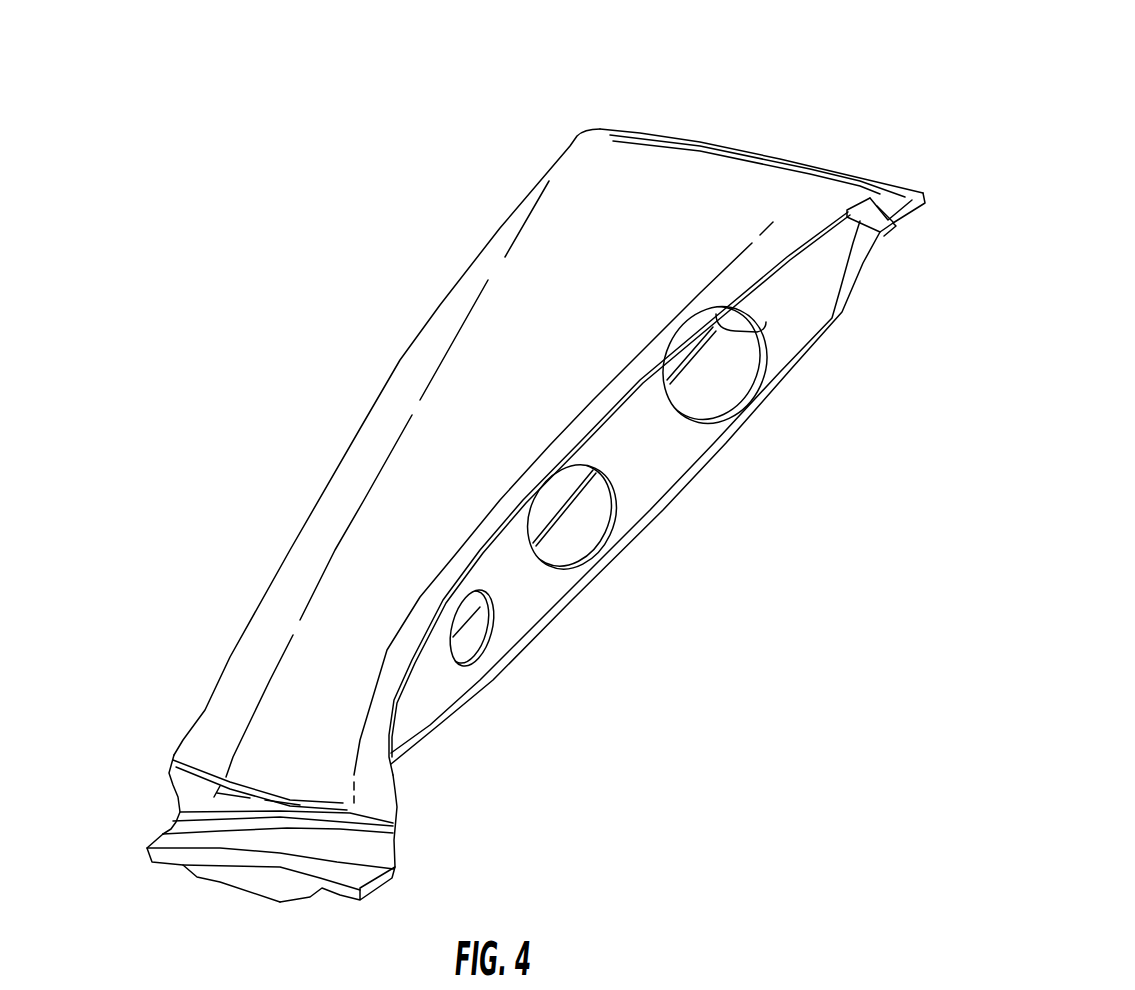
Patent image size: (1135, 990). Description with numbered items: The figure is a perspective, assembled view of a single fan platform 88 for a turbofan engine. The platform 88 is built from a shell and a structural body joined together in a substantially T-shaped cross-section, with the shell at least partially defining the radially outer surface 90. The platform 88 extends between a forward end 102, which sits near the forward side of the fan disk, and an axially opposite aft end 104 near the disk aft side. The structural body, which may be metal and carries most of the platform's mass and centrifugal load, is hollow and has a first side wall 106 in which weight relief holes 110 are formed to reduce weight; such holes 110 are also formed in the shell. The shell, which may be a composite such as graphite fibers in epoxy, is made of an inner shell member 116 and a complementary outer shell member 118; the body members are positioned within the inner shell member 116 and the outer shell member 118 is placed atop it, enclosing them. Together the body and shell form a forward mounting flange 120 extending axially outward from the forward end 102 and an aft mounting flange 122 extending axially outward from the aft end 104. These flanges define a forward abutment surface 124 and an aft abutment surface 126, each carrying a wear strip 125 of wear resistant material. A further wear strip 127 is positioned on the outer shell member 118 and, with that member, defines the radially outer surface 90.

The fan platform 88 is at (310, 367).
The radially outer surface 90 is at (448, 389).
The forward end 102 is at (126, 792).
The aft end 104 is at (867, 92).
The first side wall 106 is at (532, 603).
The weight relief holes 110 is at (588, 536).
The inner shell member 116 is at (833, 317).
The outer shell member 118 is at (852, 207).
The forward mounting flange 120 is at (371, 888).
The aft mounting flange 122 is at (910, 216).
The forward abutment surface 124 is at (287, 847).
The wear strip 125 is at (170, 840).
The aft abutment surface 126 is at (900, 196).
The wear strip 127 is at (407, 490).